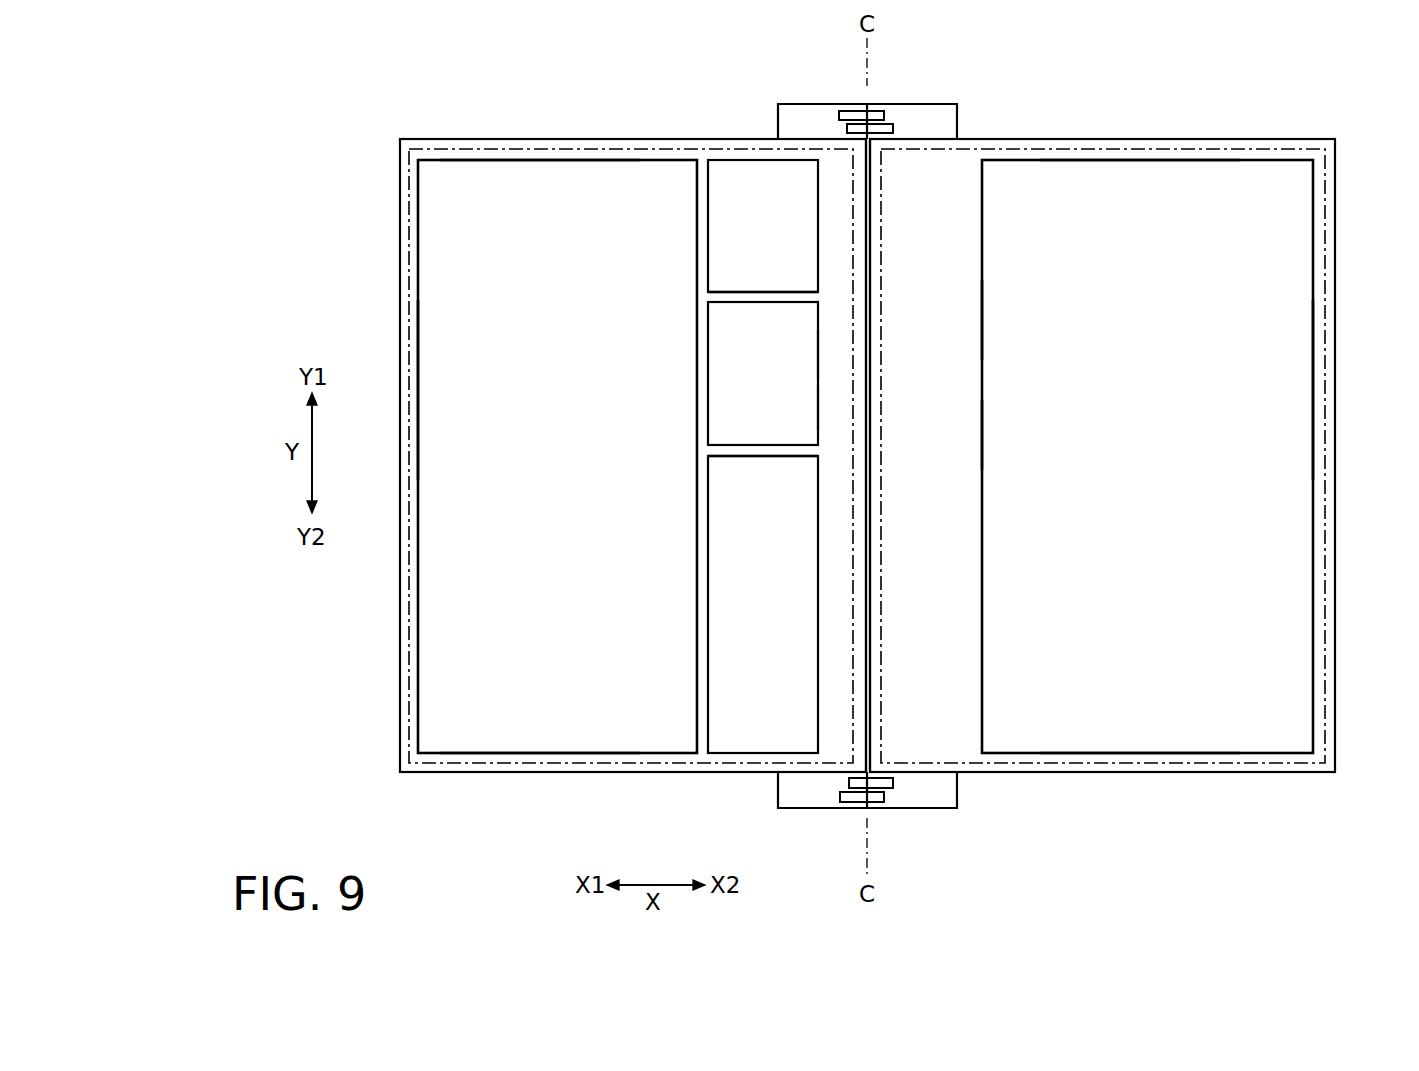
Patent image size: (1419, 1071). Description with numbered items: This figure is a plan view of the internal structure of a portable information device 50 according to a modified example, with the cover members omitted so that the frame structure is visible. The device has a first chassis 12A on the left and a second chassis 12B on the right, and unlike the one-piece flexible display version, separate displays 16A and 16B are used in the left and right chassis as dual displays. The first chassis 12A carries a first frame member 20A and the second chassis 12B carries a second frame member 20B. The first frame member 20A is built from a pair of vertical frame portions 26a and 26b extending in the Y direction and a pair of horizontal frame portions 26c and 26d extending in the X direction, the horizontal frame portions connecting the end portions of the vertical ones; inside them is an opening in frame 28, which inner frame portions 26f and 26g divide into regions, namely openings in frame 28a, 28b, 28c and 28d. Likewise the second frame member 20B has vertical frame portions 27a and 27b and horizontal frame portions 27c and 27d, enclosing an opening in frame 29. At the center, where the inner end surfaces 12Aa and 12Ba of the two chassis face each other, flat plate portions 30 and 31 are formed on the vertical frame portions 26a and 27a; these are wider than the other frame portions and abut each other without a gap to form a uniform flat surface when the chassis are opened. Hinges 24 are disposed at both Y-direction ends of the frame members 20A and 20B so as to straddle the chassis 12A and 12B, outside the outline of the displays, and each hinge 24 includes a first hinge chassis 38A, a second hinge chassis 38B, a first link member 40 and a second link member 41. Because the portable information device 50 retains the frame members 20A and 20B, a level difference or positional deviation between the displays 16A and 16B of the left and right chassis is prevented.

The portable information device 50 is at (857, 459).
The first chassis 12A is at (553, 107).
The second chassis 12B is at (1150, 105).
The inner end surface 12Aa is at (870, 500).
The inner end surface 12Ba is at (866, 566).
The display 16A is at (519, 764).
The display 16B is at (1193, 764).
The first frame member 20A is at (610, 139).
The second frame member 20B is at (1210, 139).
The hinge 24 is at (910, 459).
The vertical frame portion 26a is at (826, 403).
The vertical frame portion 26b is at (416, 386).
The horizontal frame portion 26c is at (539, 162).
The horizontal frame portion 26d is at (548, 752).
The inner frame portion 26f is at (750, 296).
The inner frame portion 26g is at (752, 456).
The vertical frame portion 27a is at (968, 434).
The vertical frame portion 27b is at (1318, 386).
The horizontal frame portion 27c is at (1128, 162).
The horizontal frame portion 27d is at (1133, 752).
The opening in frame 28 is at (557, 456).
The opening in frame 28a is at (557, 456).
The opening in frame 28b is at (763, 226).
The opening in frame 28c is at (763, 373).
The opening in frame 28d is at (763, 604).
The opening in frame 29 is at (1147, 456).
The flat plate portion 30 is at (826, 357).
The flat plate portion 31 is at (968, 320).
The first hinge chassis 38A is at (798, 113).
The second hinge chassis 38B is at (938, 113).
The first link member 40 is at (886, 128).
The second link member 41 is at (855, 113).